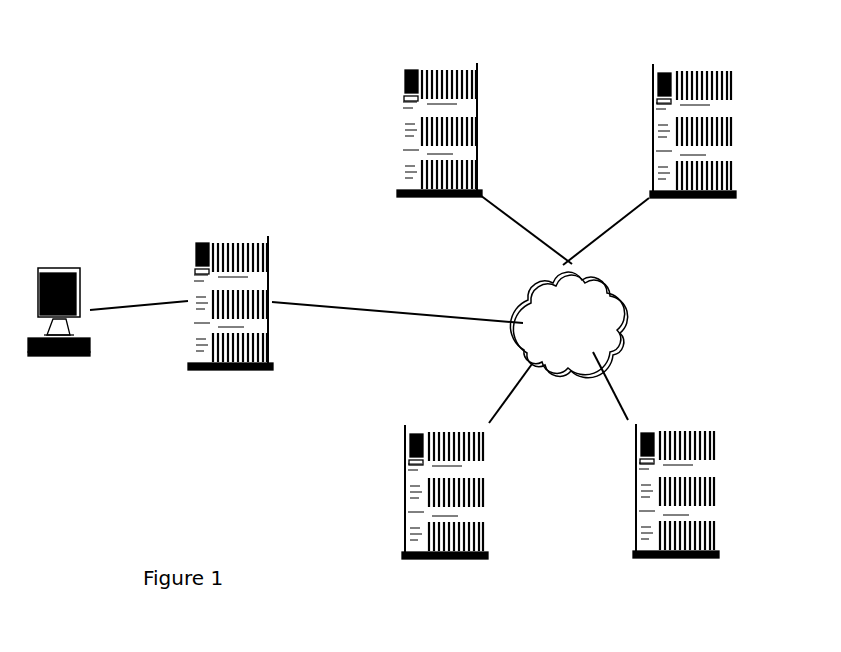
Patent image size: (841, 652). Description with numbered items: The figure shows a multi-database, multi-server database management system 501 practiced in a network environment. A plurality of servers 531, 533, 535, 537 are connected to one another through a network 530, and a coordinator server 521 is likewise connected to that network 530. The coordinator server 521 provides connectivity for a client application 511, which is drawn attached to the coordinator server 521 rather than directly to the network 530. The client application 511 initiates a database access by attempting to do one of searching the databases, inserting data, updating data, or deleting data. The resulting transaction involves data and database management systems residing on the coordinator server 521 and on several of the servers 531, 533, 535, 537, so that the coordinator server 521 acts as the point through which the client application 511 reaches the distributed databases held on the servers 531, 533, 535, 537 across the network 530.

The network system 501 is at (205, 115).
The client application 511 is at (60, 357).
The coordinator server 521 is at (228, 371).
The network 530 is at (630, 325).
The server 531 is at (443, 558).
The server 533 is at (675, 557).
The server 535 is at (692, 63).
The server 537 is at (464, 48).